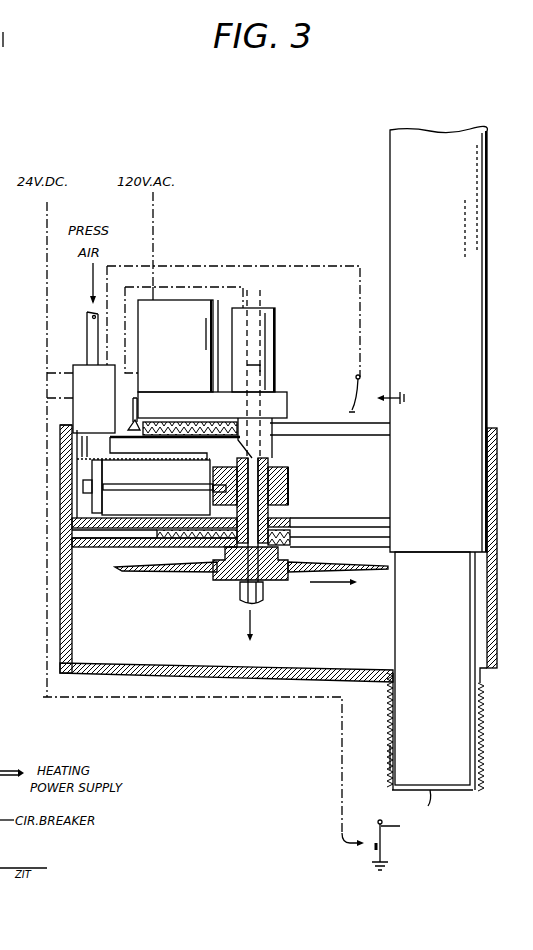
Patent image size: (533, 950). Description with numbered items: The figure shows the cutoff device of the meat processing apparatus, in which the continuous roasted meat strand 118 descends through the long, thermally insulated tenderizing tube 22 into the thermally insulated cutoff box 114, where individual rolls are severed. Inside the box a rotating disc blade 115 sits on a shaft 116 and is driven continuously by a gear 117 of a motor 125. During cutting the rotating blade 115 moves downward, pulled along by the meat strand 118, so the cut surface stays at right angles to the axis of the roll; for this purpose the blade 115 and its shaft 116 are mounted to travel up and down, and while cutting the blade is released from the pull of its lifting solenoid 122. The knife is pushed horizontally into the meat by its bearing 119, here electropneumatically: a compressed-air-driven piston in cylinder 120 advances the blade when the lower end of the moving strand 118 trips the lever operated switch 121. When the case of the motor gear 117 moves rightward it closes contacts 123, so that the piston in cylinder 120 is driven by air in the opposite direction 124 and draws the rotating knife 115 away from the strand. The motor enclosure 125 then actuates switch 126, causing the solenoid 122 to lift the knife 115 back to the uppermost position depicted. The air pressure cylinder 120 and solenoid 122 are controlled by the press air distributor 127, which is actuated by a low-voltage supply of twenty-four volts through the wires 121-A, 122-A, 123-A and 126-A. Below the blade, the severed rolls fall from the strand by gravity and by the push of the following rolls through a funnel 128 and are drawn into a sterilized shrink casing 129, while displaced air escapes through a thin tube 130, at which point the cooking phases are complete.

The cutoff box 114 is at (270, 196).
The tenderizing tube 22 is at (390, 200).
The wire 123-A is at (283, 264).
The wire 122-A is at (172, 287).
The motor 125 is at (140, 338).
The lifting solenoid 122 is at (277, 347).
The contacts 123 is at (357, 395).
The press air distributor 127 is at (78, 400).
The wire 126-A is at (124, 402).
The switch 126 is at (137, 398).
The gear 117 is at (287, 398).
The cylinder 120 is at (153, 460).
The shaft 116 is at (252, 473).
The opposite direction 124 is at (183, 502).
The bearing 119 is at (273, 510).
The rotating disc blade 115 is at (133, 572).
The meat strand 118 is at (395, 605).
The funnel 128 is at (393, 702).
The thin tube 130 is at (481, 697).
The sterilized shrink casing 129 is at (388, 757).
The wire 121-A is at (138, 705).
The lever operated switch 121 is at (397, 832).